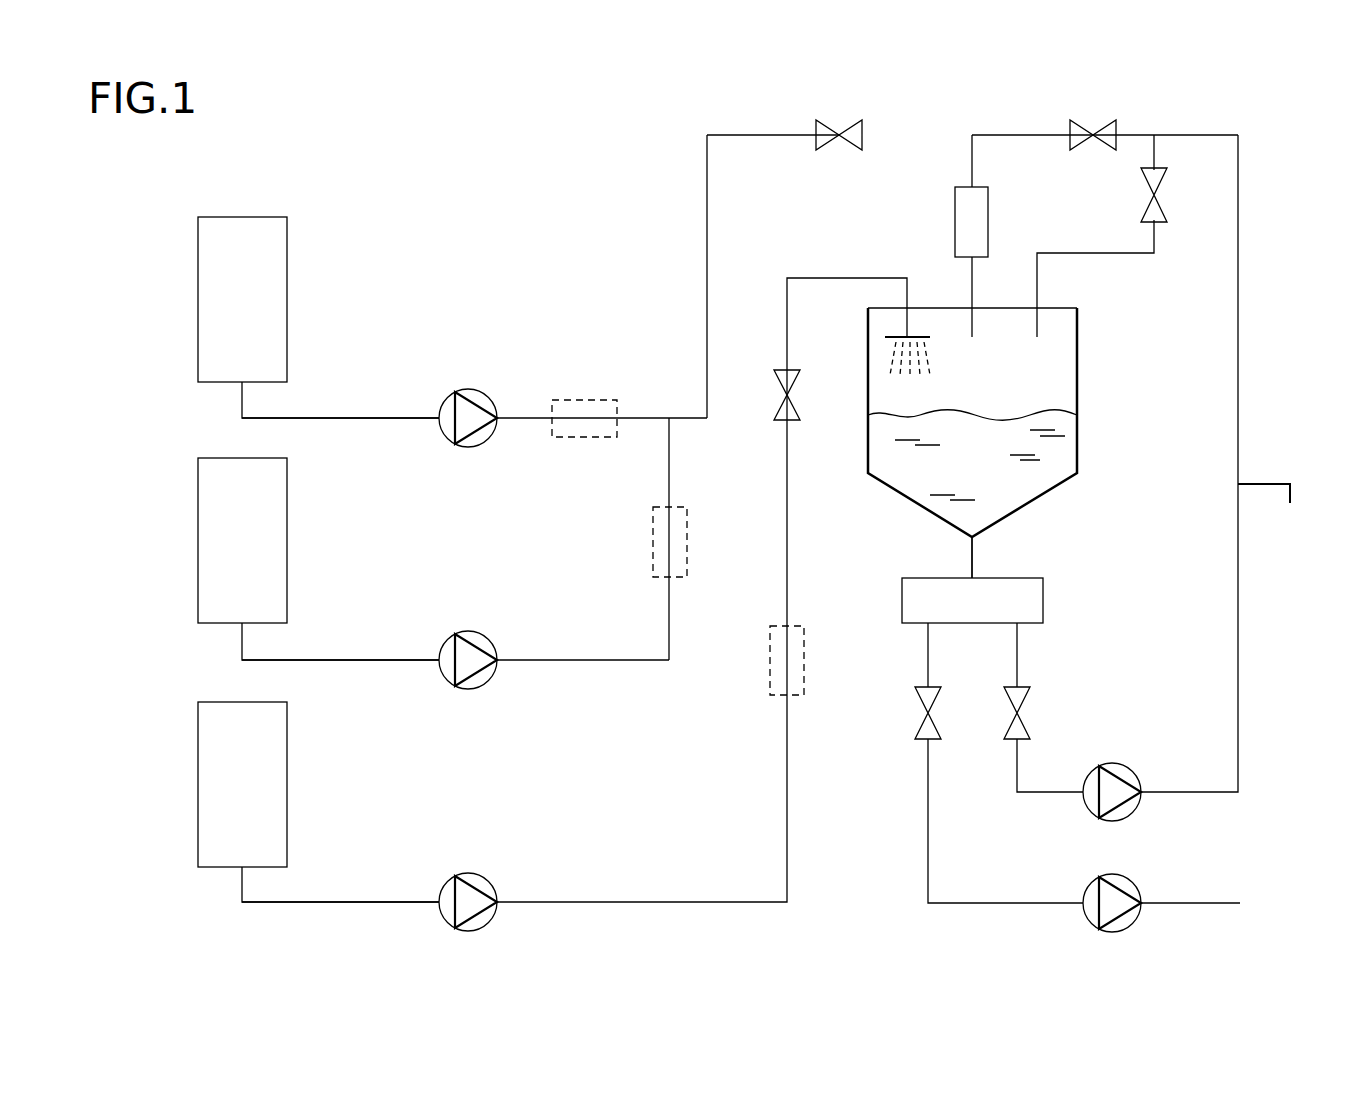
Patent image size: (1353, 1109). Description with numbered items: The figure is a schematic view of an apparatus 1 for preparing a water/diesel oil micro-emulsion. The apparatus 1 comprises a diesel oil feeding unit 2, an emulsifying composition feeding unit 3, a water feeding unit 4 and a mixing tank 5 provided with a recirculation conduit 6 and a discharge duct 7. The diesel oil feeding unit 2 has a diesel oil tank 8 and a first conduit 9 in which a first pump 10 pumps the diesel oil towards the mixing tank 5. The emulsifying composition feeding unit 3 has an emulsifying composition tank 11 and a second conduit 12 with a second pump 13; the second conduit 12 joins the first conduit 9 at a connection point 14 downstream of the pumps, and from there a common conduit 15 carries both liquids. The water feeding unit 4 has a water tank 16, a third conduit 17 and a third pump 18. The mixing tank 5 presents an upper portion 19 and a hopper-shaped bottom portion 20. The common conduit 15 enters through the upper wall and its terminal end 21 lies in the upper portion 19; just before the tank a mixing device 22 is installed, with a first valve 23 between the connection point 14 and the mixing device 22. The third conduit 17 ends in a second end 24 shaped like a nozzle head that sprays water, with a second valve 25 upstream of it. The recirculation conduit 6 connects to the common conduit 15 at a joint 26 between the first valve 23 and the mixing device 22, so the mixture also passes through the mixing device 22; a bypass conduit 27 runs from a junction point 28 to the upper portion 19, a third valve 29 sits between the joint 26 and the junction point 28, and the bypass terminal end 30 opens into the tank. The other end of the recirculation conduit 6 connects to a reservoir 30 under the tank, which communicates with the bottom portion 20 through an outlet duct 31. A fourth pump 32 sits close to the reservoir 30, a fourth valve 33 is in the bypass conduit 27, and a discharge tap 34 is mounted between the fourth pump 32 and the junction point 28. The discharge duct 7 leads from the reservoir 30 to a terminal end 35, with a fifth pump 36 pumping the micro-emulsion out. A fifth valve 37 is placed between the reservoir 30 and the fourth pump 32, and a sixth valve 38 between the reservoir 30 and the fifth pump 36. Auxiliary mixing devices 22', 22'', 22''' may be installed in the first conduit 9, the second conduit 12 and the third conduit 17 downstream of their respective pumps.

The apparatus 1 is at (355, 135).
The diesel oil feeding unit 2 is at (382, 355).
The emulsifying composition feeding unit 3 is at (168, 570).
The water feeding unit 4 is at (275, 915).
The mixing tank 5 is at (1095, 435).
The recirculation conduit 6 is at (1250, 305).
The discharge duct 7 is at (1012, 915).
The diesel oil tank 8 is at (233, 312).
The first conduit 9 is at (352, 420).
The first pump 10 is at (490, 390).
The emulsifying composition tank 11 is at (229, 554).
The second conduit 12 is at (388, 660).
The second pump 13 is at (490, 632).
The connection point 14 is at (669, 400).
The common conduit 15 is at (707, 178).
The water tank 16 is at (229, 798).
The third conduit 17 is at (383, 902).
The third pump 18 is at (490, 874).
The upper portion 19 is at (1000, 385).
The bottom portion 20 is at (1020, 478).
The terminal end 21 is at (965, 325).
The mixing device 22 is at (929, 221).
The auxiliary mixing device 22' is at (602, 372).
The auxiliary mixing device 22'' is at (592, 583).
The auxiliary mixing device 22''' is at (702, 590).
The first valve 23 is at (828, 123).
The second end 24 is at (888, 337).
The second valve 25 is at (784, 420).
The joint 26 is at (972, 135).
The bypass conduit 27 is at (1110, 250).
The junction point 28 is at (1154, 135).
The third valve 29 is at (1080, 123).
The reservoir 30 is at (959, 613).
The outlet duct 31 is at (960, 560).
The fourth pump 32 is at (1115, 763).
The fourth valve 33 is at (1143, 200).
The discharge tap 34 is at (1242, 484).
The terminal end 35 is at (1240, 903).
The fifth pump 36 is at (1125, 875).
The fifth valve 37 is at (1030, 700).
The sixth valve 38 is at (918, 722).